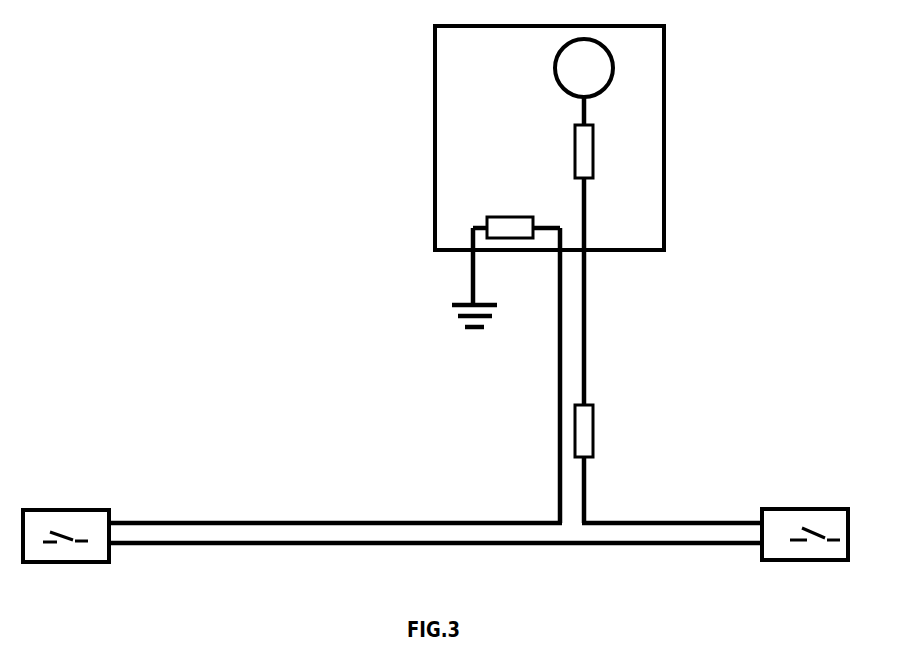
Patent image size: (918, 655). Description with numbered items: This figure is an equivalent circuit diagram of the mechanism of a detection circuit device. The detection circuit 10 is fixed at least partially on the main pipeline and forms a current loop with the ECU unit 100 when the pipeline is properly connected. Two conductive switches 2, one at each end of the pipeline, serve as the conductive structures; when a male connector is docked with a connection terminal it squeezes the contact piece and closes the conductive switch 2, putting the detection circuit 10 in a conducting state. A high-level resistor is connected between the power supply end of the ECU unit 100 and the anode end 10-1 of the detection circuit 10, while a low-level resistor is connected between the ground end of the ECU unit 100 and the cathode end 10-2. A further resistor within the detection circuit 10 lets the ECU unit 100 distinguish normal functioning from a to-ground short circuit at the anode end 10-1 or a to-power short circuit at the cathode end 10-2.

The ECU unit 100 is at (645, 145).
The anode end of the detection circuit 10-1 is at (588, 280).
The cathode end of the detection circuit 10-2 is at (557, 273).
The detection circuit 10 is at (285, 522).
The conductive switch 2 is at (60, 522).